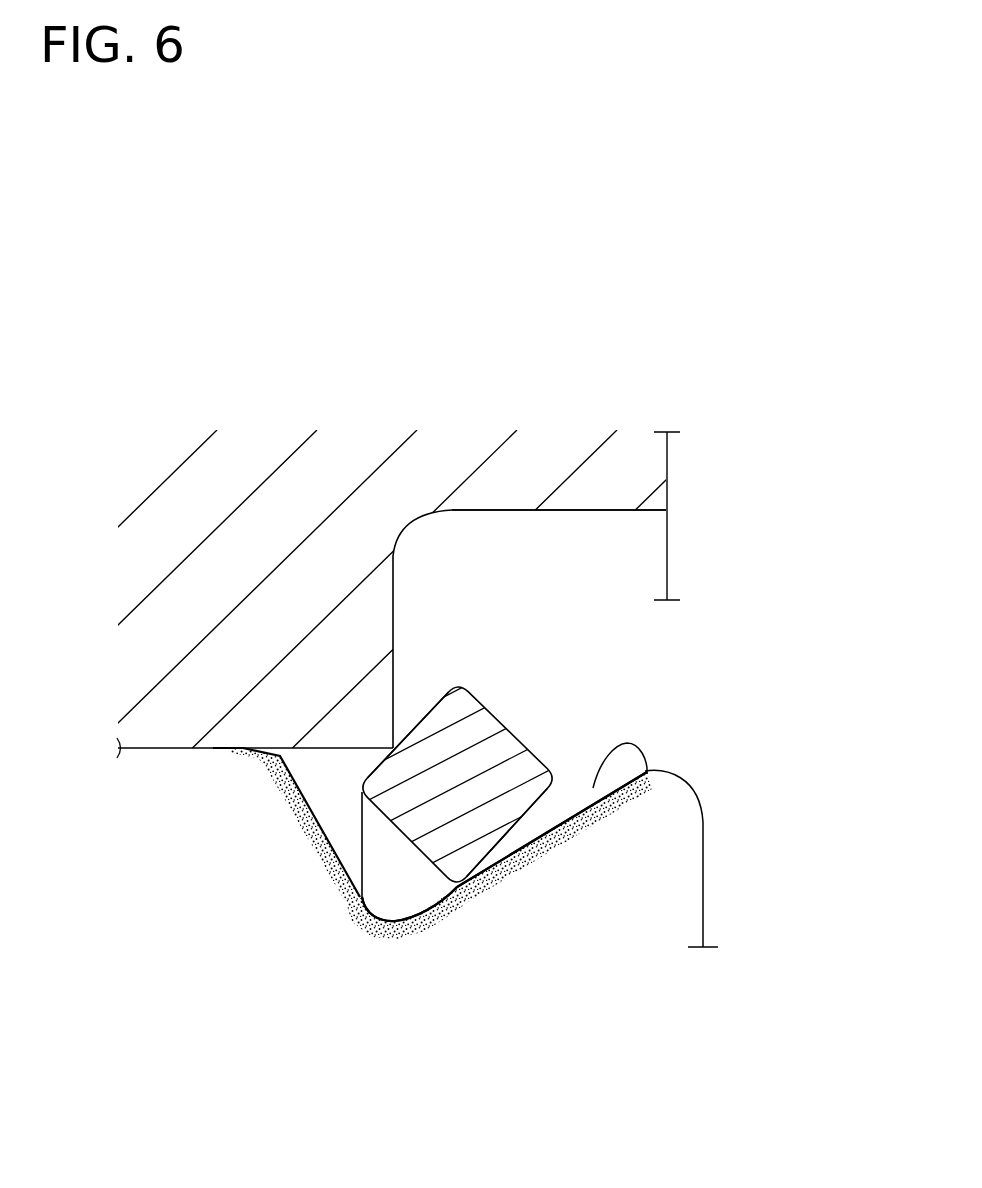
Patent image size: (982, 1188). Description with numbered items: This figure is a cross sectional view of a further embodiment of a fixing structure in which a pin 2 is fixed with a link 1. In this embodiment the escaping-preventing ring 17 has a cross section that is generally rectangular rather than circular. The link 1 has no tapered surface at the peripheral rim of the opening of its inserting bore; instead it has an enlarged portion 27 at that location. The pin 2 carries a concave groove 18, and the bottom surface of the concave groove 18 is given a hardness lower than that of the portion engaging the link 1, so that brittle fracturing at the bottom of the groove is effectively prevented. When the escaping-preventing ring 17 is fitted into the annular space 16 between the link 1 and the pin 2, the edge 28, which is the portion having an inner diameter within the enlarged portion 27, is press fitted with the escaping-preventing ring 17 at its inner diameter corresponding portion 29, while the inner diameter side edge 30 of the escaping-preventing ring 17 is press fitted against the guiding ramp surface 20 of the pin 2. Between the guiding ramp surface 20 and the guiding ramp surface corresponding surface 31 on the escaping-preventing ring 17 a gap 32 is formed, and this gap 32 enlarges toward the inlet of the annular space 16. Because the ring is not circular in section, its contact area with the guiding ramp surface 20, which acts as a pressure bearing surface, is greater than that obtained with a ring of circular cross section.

The link 1 is at (672, 459).
The pin 2 is at (708, 880).
The annular space 16 is at (632, 623).
The escaping-preventing ring 17 is at (517, 725).
The concave groove 18 is at (328, 872).
The guiding ramp surface 20 is at (648, 770).
The enlarged portion 27 is at (608, 512).
The edge 28 is at (362, 790).
The inner diameter corresponding portion 29 is at (434, 706).
The inner diameter side edge 30 is at (453, 885).
The guiding ramp surface corresponding surface 31 is at (528, 820).
The gap 32 is at (544, 808).